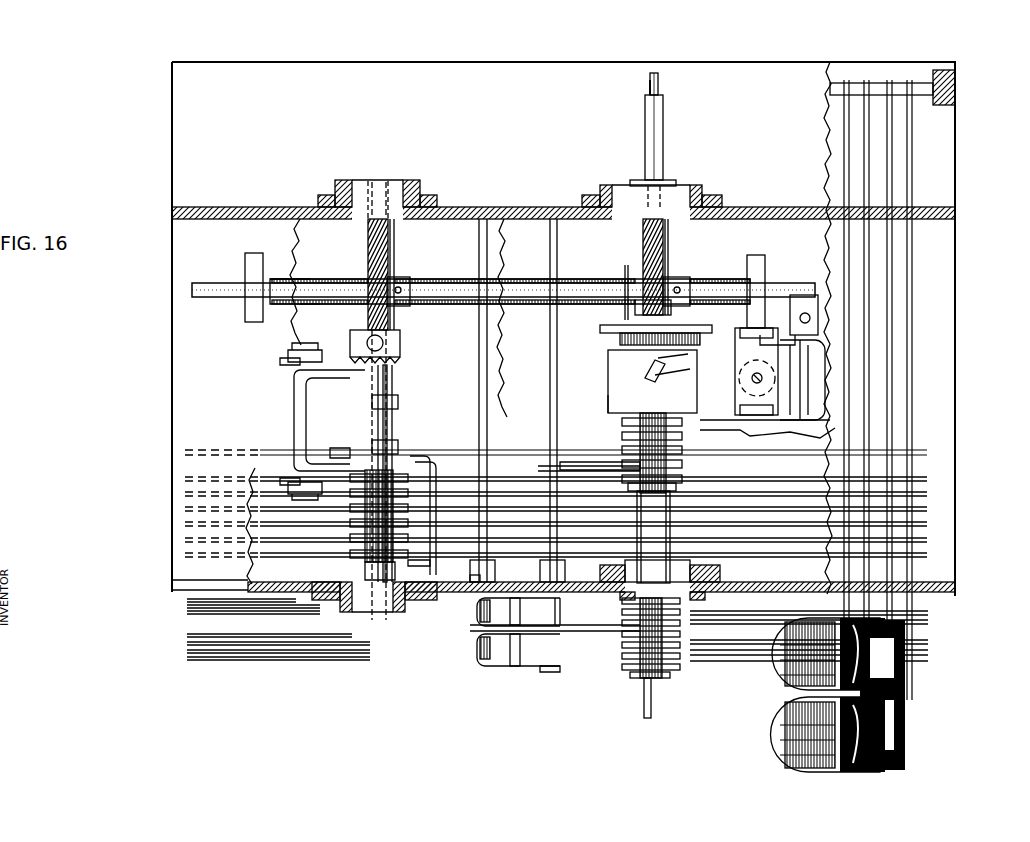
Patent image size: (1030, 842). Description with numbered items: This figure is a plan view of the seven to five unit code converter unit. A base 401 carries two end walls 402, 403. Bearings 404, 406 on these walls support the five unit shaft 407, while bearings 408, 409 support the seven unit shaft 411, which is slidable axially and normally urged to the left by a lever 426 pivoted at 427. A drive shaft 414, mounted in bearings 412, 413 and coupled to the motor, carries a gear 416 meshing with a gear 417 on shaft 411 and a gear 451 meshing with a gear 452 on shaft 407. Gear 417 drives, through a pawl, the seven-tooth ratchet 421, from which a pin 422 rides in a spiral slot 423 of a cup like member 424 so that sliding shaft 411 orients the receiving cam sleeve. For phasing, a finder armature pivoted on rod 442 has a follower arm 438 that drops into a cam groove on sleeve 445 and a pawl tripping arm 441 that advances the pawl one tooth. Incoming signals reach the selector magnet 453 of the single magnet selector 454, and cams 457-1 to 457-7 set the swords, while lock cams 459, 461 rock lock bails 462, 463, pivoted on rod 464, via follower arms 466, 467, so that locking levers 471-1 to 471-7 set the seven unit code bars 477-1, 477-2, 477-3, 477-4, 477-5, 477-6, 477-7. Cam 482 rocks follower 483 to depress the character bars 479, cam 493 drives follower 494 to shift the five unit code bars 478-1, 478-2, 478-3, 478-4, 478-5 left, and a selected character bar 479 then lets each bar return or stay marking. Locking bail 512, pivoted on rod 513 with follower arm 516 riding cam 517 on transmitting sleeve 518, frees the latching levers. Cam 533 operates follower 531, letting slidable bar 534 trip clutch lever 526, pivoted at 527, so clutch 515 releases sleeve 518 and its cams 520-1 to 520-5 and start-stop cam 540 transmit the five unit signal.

The base 401 is at (172, 268).
The end wall 402 is at (560, 207).
The end wall 403 is at (470, 592).
The bearing 404 is at (440, 175).
The bearing 406 is at (402, 614).
The shaft 407 is at (379, 180).
The bearing 408 is at (685, 186).
The bearing 409 is at (720, 575).
The shaft 411 is at (645, 148).
The bearing 412 is at (765, 255).
The bearing 413 is at (245, 266).
The shaft 414 is at (209, 297).
The gear 416 is at (643, 240).
The gear 417 is at (620, 278).
The ratchet 421 is at (618, 342).
The pin 422 is at (678, 354).
The spiral slot 423 is at (688, 383).
The cup like member 424 is at (608, 400).
The lever 426 is at (660, 85).
The pivot rod 427 is at (925, 95).
The follower arm 438 is at (738, 417).
The pawl tripping arm 441 is at (752, 326).
The rod 442 is at (824, 422).
The sleeve 445 is at (670, 474).
The gear 451 is at (368, 241).
The gear 452 is at (350, 280).
The selector magnet 453 is at (774, 733).
The single magnet selector 454 is at (702, 677).
The cam 457-1 is at (622, 604).
The cam 457-7 is at (622, 661).
The lock cam 459 is at (683, 622).
The lock cam 461 is at (727, 624).
The lock bail 462 is at (480, 575).
The lock bail 463 is at (492, 665).
The rod 464 is at (548, 666).
The follower arm 466 is at (502, 648).
The follower arm 467 is at (572, 630).
The locking lever 471-1 is at (555, 614).
The locking lever 471-7 is at (483, 657).
The seven unit code bar 477-1 is at (187, 600).
The seven unit code bar 477-2 is at (187, 606).
The seven unit code bar 477-3 is at (187, 613).
The seven unit code bar 477-4 is at (187, 636).
The seven unit code bar 477-5 is at (187, 644).
The seven unit code bar 477-6 is at (187, 653).
The seven unit code bar 477-7 is at (240, 660).
The five unit code bar 478-1 is at (184, 488).
The five unit code bar 478-2 is at (183, 497).
The five unit code bar 478-3 is at (184, 511).
The five unit code bar 478-4 is at (184, 526).
The five unit code bar 478-5 is at (184, 542).
The character bars 479 is at (890, 286).
The cam 482 is at (623, 436).
The follower 483 is at (680, 416).
The cam 493 is at (629, 488).
The follower 494 is at (538, 468).
The locking bail 512 is at (410, 484).
The rod 513 is at (487, 369).
The clutch 515 is at (413, 351).
The follower arm 516 is at (455, 427).
The cam 517 is at (397, 437).
The transmitting sleeve 518 is at (322, 443).
The transmitting cam 520-1 is at (345, 500).
The transmitting cam 520-5 is at (430, 560).
The clutch lever 526 is at (280, 380).
The pivot points 527 is at (290, 350).
The follower 531 is at (730, 455).
The cam 533 is at (625, 468).
The slidable bar 534 is at (526, 457).
The start-stop transmitting cam 540 is at (424, 462).